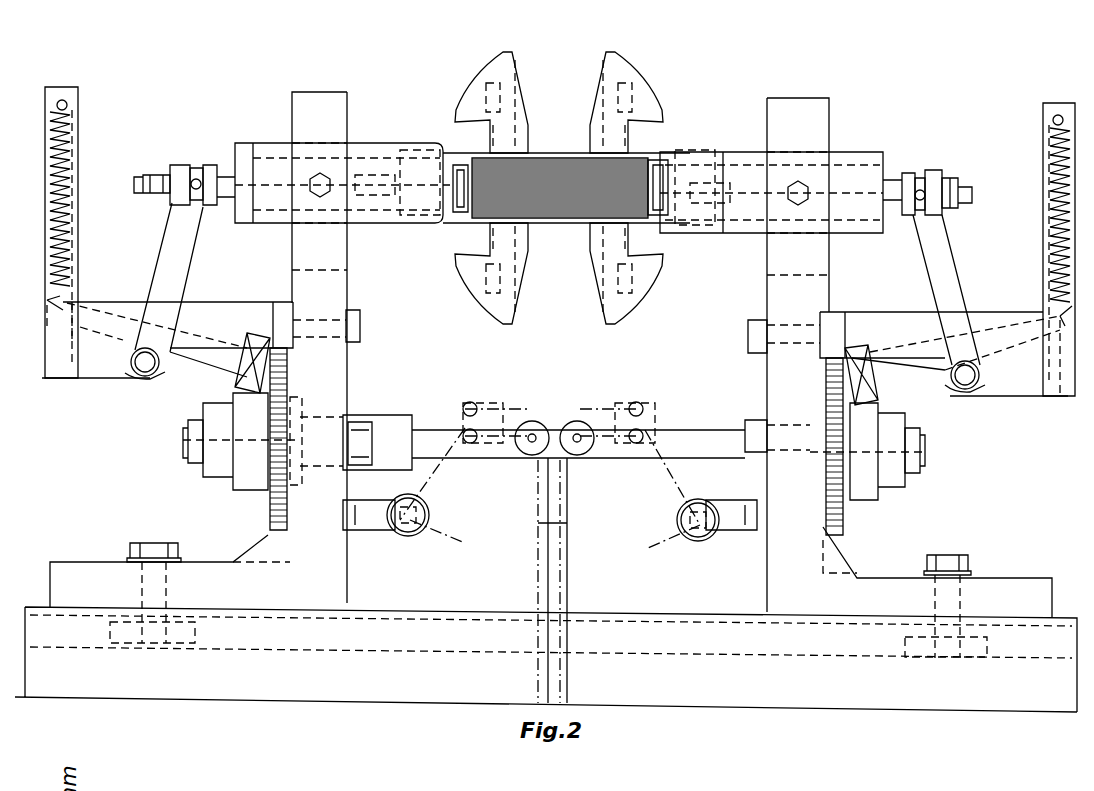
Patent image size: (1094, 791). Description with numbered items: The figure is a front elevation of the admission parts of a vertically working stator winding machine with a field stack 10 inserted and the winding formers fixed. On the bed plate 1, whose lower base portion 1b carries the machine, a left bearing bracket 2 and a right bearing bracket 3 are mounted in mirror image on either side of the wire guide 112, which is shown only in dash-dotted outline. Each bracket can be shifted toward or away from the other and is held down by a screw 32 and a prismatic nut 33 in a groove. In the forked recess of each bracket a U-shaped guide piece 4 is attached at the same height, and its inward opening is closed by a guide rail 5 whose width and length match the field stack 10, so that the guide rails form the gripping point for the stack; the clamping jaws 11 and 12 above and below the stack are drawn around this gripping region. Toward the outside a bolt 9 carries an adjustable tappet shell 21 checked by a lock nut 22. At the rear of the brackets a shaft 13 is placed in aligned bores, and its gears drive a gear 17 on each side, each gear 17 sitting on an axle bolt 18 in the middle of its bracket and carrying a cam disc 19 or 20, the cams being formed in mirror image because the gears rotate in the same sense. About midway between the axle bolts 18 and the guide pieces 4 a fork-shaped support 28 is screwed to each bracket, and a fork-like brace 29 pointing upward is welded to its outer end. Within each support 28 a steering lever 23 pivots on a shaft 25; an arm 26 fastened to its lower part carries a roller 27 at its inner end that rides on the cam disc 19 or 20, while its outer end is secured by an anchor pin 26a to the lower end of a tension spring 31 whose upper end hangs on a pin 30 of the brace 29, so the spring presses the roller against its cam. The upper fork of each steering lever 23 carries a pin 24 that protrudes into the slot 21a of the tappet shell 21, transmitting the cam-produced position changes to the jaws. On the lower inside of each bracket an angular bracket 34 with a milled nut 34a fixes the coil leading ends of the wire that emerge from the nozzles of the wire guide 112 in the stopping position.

The bed plate 1 is at (495, 610).
The base plate 1b is at (85, 628).
The bearing bracket 2 is at (313, 100).
The bearing bracket 3 is at (803, 108).
The U-shaped guide piece 4 is at (366, 150).
The guide rail 5 is at (455, 165).
The bolt 9 is at (222, 173).
The field stack 10 is at (563, 155).
The clamping jaw 11 is at (475, 92).
The clamping jaw 12 is at (640, 92).
The shaft 13 is at (687, 438).
The gear 17 is at (273, 500).
The axle bolt 18 is at (193, 436).
The cam disc 19 is at (870, 464).
The cam disc 20 is at (240, 454).
The tappet shell 21 is at (180, 165).
The slot 21a is at (197, 168).
The lock nut 22 is at (165, 175).
The steering lever 23 is at (163, 253).
The pin 24 is at (210, 205).
The shaft 25 is at (143, 366).
The arm 26 is at (102, 320).
The anchor pin 26a is at (58, 303).
The roller 27 is at (233, 388).
The fork-shaped support 28 is at (228, 303).
The fork-like brace 29 is at (62, 87).
The pin 30 is at (68, 105).
The tension spring 31 is at (72, 144).
The screw 32 is at (152, 550).
The prismatic nut 33 is at (125, 630).
The angular bracket 34 is at (368, 525).
The milled nut 34a is at (413, 533).
The wire guide 112 is at (563, 574).